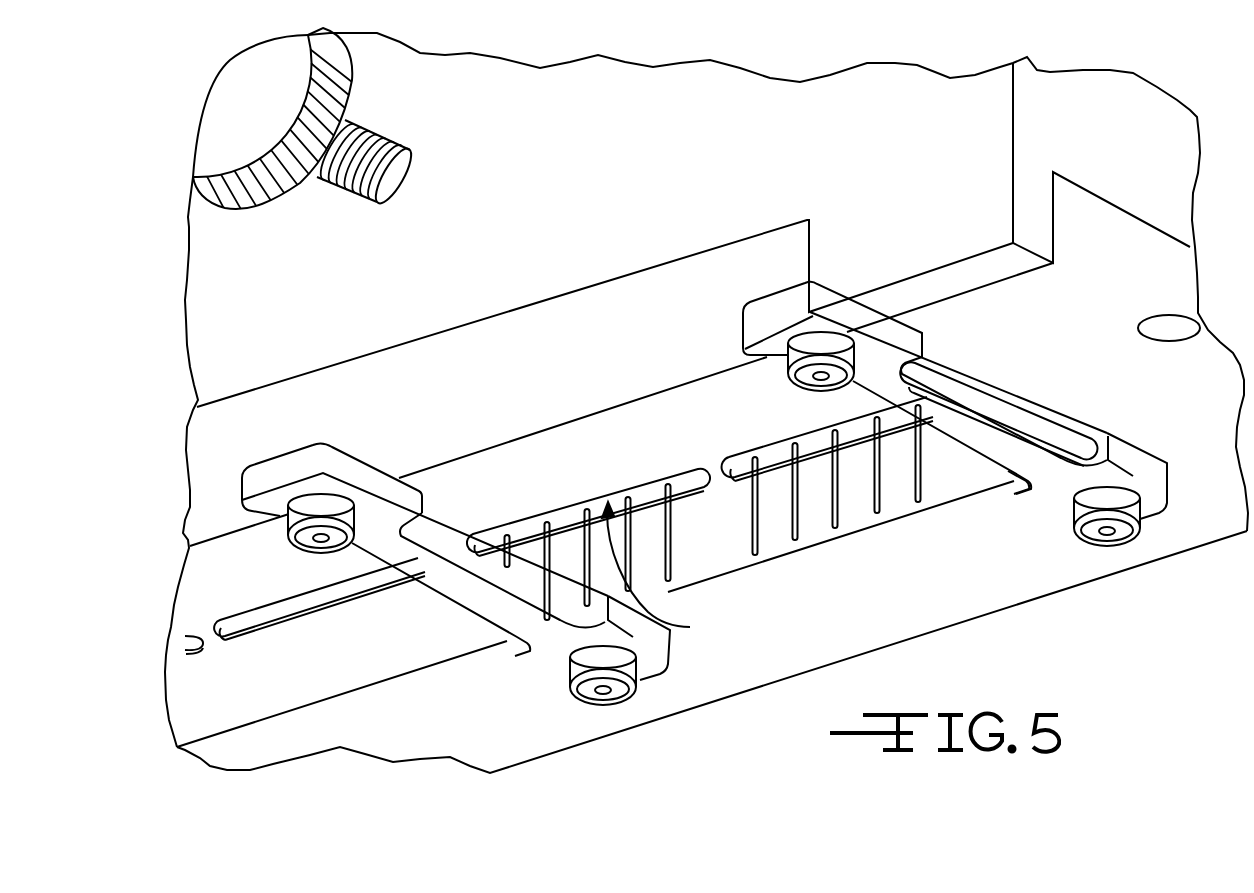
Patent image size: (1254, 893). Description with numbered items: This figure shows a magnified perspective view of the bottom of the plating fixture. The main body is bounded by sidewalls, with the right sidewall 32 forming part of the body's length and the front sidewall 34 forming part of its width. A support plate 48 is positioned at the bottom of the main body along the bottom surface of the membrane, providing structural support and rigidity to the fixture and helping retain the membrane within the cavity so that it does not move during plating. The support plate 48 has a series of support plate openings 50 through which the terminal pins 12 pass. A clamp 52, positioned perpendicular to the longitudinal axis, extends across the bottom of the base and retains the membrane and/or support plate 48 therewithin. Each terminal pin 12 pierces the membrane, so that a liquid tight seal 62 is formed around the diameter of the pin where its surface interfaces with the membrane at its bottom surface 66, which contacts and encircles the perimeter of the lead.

The terminal pin 12 is at (843, 507).
The right sidewall 32 is at (677, 127).
The front sidewall 34 is at (1137, 120).
The support plate 48 is at (235, 565).
The support plate opening 50 is at (670, 472).
The clamp 52 is at (460, 593).
The liquid tight seal 62 is at (760, 462).
The bottom surface 66 is at (663, 572).